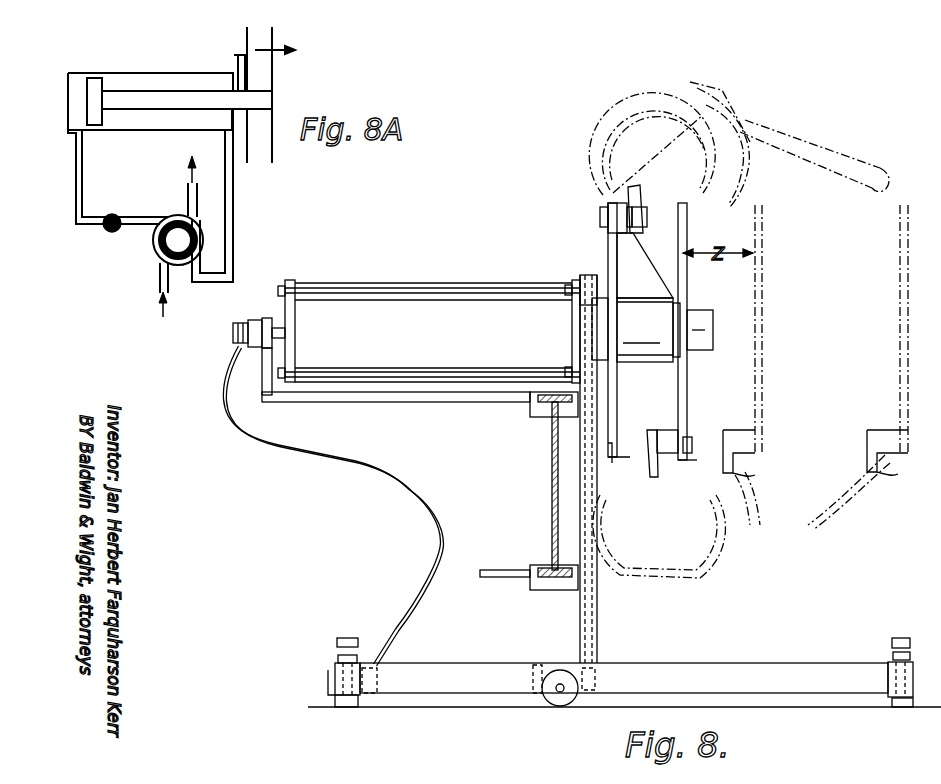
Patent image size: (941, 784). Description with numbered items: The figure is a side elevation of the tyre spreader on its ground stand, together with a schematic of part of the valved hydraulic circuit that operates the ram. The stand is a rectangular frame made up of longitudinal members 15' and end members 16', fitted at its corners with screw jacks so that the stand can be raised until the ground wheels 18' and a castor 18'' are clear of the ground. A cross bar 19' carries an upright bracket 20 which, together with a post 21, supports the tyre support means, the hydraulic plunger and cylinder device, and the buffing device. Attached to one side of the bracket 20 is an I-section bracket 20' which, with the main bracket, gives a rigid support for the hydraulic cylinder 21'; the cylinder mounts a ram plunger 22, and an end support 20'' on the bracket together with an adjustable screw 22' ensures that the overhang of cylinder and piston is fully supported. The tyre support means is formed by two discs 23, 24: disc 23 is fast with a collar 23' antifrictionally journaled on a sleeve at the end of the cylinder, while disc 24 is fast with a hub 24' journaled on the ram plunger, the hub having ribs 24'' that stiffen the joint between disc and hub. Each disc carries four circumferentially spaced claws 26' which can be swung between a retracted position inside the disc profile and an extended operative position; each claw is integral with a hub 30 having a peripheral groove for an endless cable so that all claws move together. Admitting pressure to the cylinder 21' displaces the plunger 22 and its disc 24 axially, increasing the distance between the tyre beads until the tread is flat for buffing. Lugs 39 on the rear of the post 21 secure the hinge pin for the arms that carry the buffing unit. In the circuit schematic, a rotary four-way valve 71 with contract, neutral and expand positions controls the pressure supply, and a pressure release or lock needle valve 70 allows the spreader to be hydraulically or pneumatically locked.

In FIG. 8, the longitudinal members 15' is at (624, 662).
In FIG. 8, the end members 16' is at (333, 514).
In FIG. 8, the ground wheels 18' is at (555, 672).
In FIG. 8, the castor 18'' is at (606, 672).
In FIG. 8, the cross bar 19' is at (615, 661).
In FIG. 8, the upright bracket 20 is at (551, 278).
In FIG. 8, the I-section bracket 20' is at (538, 486).
In FIG. 8, the end support 20'' is at (396, 388).
In FIG. 8, the post 21 is at (576, 469).
In FIG. 8A, the hydraulic cylinder 21' is at (158, 163).
In FIG. 8, the hydraulic cylinder 21' is at (429, 331).
In FIG. 8A, the ram plunger 22 is at (179, 118).
In FIG. 8, the adjustable screw 22' is at (247, 325).
In FIG. 8A, the disc 23 is at (272, 111).
In FIG. 8, the disc 23 is at (617, 333).
In FIG. 8, the collar 23' is at (632, 343).
In FIG. 8A, the disc 24 is at (285, 95).
In FIG. 8, the disc 24 is at (702, 331).
In FIG. 8, the hub 24' is at (718, 321).
In FIG. 8, the ribs 24'' is at (712, 349).
In FIG. 8, the claws 26' is at (748, 330).
In FIG. 8, the hub 30 is at (617, 209).
In FIG. 8, the lugs 39 is at (545, 586).
In FIG. 8A, the pressure release or lock needle valve 70 is at (118, 216).
In FIG. 8A, the four-way valve 71 is at (198, 236).